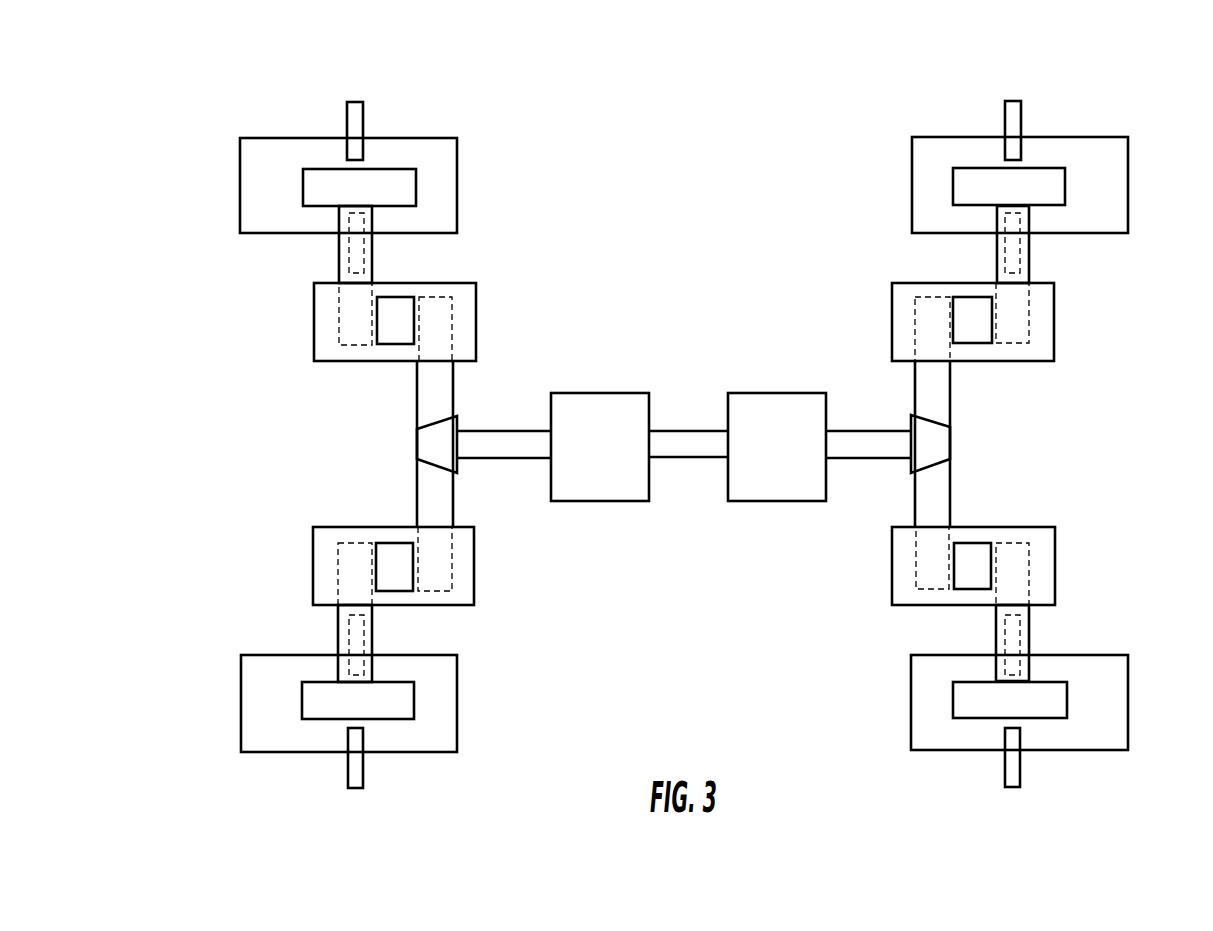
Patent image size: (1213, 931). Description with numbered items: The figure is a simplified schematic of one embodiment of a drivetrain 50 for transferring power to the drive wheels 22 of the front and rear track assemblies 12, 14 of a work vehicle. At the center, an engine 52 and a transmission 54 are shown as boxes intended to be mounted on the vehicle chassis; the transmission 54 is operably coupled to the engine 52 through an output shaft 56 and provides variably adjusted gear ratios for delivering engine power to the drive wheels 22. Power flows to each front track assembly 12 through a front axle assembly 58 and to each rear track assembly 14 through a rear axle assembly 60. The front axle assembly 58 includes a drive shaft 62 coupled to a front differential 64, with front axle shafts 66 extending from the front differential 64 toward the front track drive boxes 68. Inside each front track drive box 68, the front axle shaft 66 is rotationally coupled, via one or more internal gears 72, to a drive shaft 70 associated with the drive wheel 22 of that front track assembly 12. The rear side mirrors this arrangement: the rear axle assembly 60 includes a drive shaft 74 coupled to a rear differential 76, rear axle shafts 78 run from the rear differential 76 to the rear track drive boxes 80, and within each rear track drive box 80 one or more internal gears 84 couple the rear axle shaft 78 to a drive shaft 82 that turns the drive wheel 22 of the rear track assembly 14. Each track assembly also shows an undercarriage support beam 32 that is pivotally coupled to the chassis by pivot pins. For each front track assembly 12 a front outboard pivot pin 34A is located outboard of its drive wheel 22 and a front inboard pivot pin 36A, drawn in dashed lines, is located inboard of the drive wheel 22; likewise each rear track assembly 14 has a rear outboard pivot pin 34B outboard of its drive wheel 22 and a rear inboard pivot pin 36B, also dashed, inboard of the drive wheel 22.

The front track assembly 12 is at (1098, 113).
The rear track assembly 14 is at (271, 112).
The drive wheel 22 is at (303, 190).
The undercarriage support beam 32 is at (447, 233).
The front outboard pivot pin 34A is at (1003, 127).
The rear outboard pivot pin 34B is at (364, 126).
The front inboard pivot pin 36A is at (1020, 243).
The rear inboard pivot pin 36B is at (347, 243).
The drivetrain 50 is at (750, 119).
The engine 52 is at (612, 458).
The transmission 54 is at (789, 458).
The output shaft 56 is at (675, 458).
The front axle assembly 58 is at (1083, 434).
The rear axle assembly 60 is at (281, 433).
The drive shaft 62 is at (852, 431).
The front differential 64 is at (938, 440).
The front axle shaft 66 is at (935, 395).
The front track drive box 68 is at (892, 305).
The drive shaft 70 is at (997, 242).
The internal gear 72 is at (969, 320).
The drive shaft 74 is at (511, 431).
The rear differential 76 is at (430, 442).
The rear axle shaft 78 is at (433, 396).
The rear track drive box 80 is at (477, 305).
The drive shaft 82 is at (373, 241).
The internal gear 84 is at (397, 322).